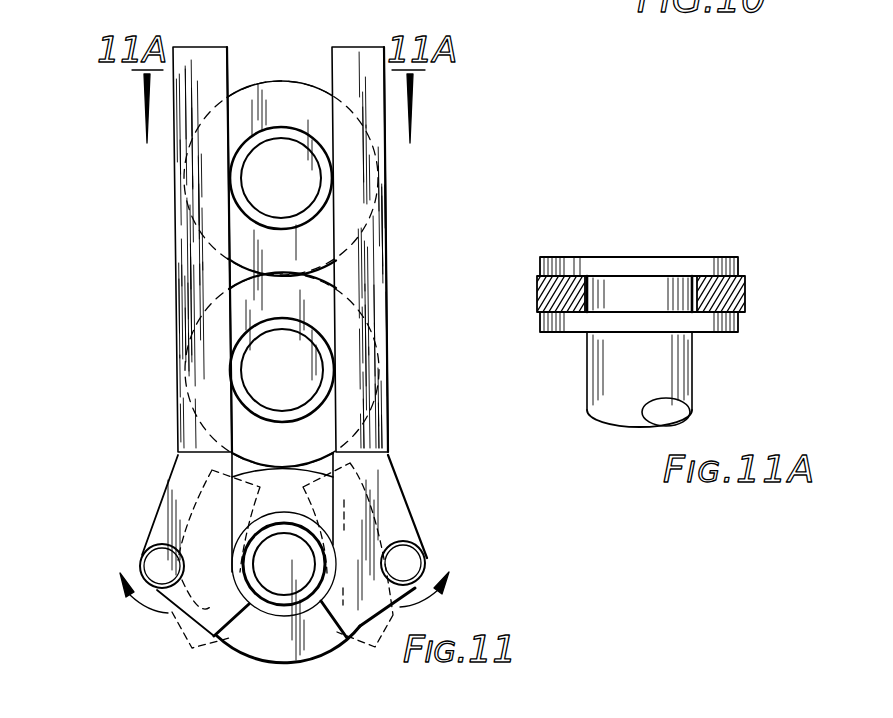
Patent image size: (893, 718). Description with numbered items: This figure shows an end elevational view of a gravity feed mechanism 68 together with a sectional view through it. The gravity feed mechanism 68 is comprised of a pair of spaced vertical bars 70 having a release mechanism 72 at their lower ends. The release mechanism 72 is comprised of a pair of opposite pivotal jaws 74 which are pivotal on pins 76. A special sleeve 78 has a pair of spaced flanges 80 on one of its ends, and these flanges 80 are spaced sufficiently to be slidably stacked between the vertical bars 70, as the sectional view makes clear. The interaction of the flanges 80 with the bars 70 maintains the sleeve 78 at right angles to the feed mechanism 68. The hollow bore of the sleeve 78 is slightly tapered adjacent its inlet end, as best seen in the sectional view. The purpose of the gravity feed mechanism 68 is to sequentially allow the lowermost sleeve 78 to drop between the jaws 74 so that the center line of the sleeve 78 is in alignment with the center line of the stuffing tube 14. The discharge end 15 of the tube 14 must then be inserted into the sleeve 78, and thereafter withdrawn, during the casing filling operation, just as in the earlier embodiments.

In FIG. 11, the stuffing tube 14 is at (328, 508).
In FIG. 11, the discharge end 15 is at (313, 550).
In FIG. 11, the gravity feed mechanism 68 is at (143, 243).
In FIG. 11, the vertical bars 70 is at (335, 58).
In FIG. 11A, the vertical bars 70 is at (548, 290).
In FIG. 11, the release mechanism 72 is at (167, 492).
In FIG. 11, the pivotal jaws 74 is at (170, 521).
In FIG. 11, the pins 76 is at (157, 558).
In FIG. 11, the sleeve 78 is at (298, 217).
In FIG. 11A, the sleeve 78 is at (618, 360).
In FIG. 11, the flanges 80 is at (229, 290).
In FIG. 11A, the flanges 80 is at (680, 263).